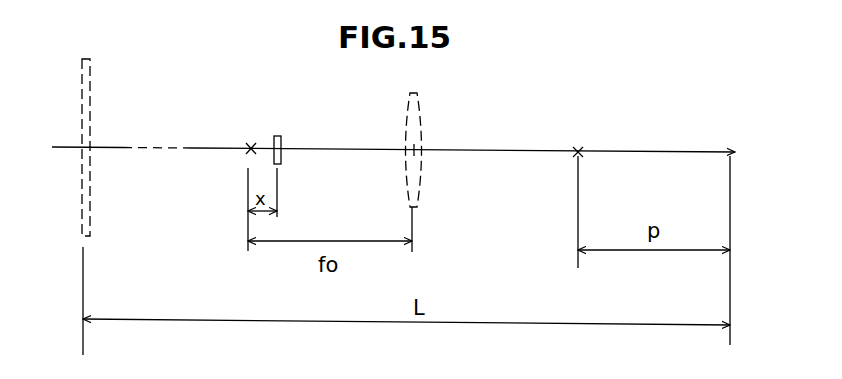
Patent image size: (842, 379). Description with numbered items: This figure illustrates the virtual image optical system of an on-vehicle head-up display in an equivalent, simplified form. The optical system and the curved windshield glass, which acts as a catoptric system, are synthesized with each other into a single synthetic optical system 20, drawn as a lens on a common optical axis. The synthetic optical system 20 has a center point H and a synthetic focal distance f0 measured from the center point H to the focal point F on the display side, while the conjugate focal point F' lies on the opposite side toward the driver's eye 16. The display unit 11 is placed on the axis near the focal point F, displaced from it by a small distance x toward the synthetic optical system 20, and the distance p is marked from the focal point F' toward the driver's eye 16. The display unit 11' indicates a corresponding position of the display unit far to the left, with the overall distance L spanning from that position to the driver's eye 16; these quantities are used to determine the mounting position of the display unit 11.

The object (imaginary position) 11' is at (118, 137).
The display unit 11 is at (299, 117).
The synthetic optical system 20 is at (419, 94).
The driver's eye 16 is at (732, 148).
The focal point F is at (249, 124).
The rear focal point F' is at (579, 129).
The center point H is at (420, 148).